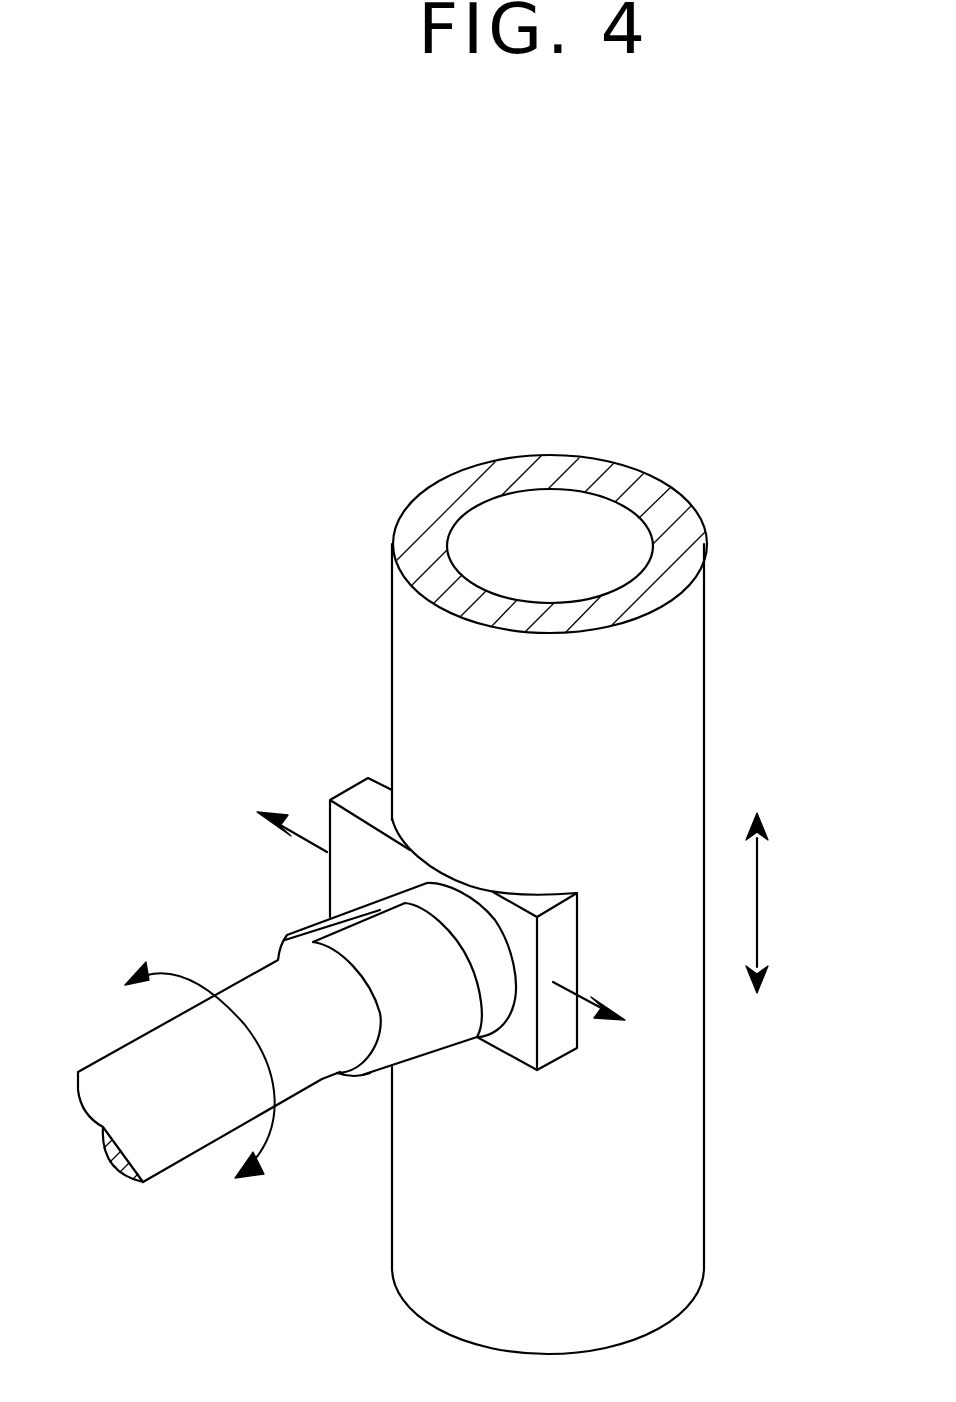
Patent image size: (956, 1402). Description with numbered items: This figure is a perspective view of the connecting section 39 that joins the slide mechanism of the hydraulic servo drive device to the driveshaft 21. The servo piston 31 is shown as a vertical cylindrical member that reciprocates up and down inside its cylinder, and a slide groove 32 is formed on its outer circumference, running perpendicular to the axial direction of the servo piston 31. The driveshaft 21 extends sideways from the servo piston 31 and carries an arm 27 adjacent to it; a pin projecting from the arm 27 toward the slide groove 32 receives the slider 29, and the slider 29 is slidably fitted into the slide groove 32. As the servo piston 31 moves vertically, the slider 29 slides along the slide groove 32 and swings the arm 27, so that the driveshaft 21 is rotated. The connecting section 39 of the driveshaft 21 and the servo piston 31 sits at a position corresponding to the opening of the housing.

The driveshaft 21 is at (120, 1063).
The arm 27 is at (430, 1025).
The slider 29 is at (364, 795).
The servo piston 31 is at (678, 690).
The slide groove 32 is at (545, 897).
The connecting section 39 is at (288, 908).